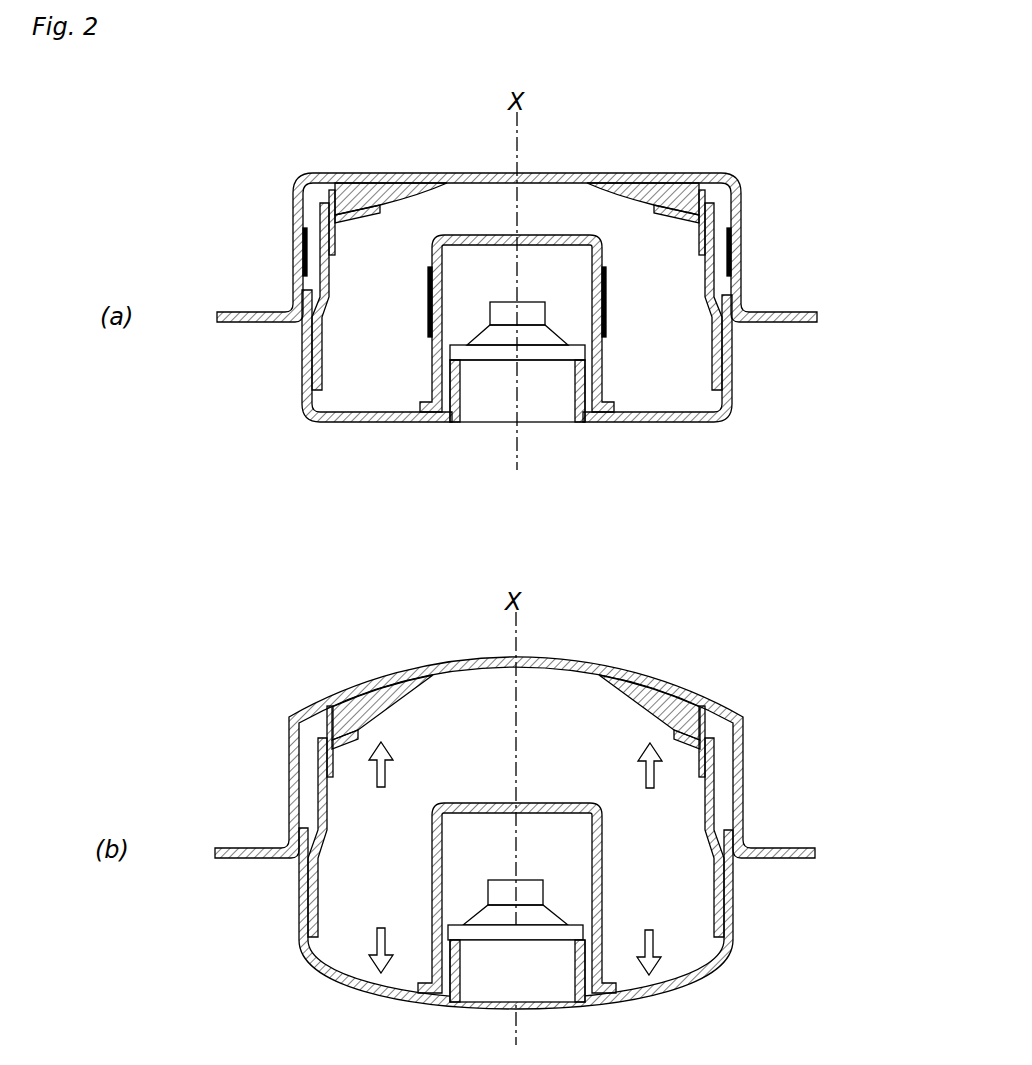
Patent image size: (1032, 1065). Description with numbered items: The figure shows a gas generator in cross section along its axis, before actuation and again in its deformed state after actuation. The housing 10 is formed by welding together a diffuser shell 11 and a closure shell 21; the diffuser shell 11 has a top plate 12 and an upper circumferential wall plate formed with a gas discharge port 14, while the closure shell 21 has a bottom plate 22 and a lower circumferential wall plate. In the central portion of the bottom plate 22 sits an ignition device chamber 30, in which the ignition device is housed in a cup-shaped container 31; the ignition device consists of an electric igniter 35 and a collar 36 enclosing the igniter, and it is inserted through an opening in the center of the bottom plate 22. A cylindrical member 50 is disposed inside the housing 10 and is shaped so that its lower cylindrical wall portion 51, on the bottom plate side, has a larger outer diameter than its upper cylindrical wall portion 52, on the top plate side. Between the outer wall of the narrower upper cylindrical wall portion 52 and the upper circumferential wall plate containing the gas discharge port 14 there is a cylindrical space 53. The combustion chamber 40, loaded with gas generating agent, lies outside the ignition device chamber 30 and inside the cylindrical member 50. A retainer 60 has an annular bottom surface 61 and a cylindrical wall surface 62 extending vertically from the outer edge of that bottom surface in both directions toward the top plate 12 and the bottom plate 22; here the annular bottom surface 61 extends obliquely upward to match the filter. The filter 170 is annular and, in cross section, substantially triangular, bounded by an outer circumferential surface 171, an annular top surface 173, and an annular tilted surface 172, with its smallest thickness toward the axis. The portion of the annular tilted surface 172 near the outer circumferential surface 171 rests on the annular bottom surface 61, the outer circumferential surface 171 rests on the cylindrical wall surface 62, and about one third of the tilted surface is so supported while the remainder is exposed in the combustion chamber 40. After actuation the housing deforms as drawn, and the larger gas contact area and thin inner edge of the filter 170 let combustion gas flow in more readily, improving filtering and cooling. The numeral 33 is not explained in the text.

The housing 10 is at (866, 288).
The diffuser shell 11 is at (738, 292).
The top plate 12 is at (452, 172).
The gas discharge port 14 is at (738, 250).
The closure shell 21 is at (735, 358).
The bottom plate 22 is at (652, 424).
The ignition device chamber 30 is at (517, 597).
The cup-shaped container 31 is at (547, 236).
The top plate 33 is at (478, 236).
The electric igniter 35 is at (531, 302).
The collar 36 is at (534, 402).
The combustion chamber 40 is at (398, 842).
The cylindrical member 50 is at (516, 570).
The lower cylindrical wall portion 51 is at (717, 356).
The upper cylindrical wall portion 52 is at (709, 284).
The cylindrical space 53 is at (308, 217).
The retainer 60 is at (341, 226).
The annular bottom surface 61 is at (378, 221).
The cylindrical wall surface 62 is at (320, 200).
The filter 170 is at (646, 214).
The outer circumferential surface 171 is at (718, 176).
The annular tilted surface 172 is at (631, 204).
The annular top surface 173 is at (641, 181).